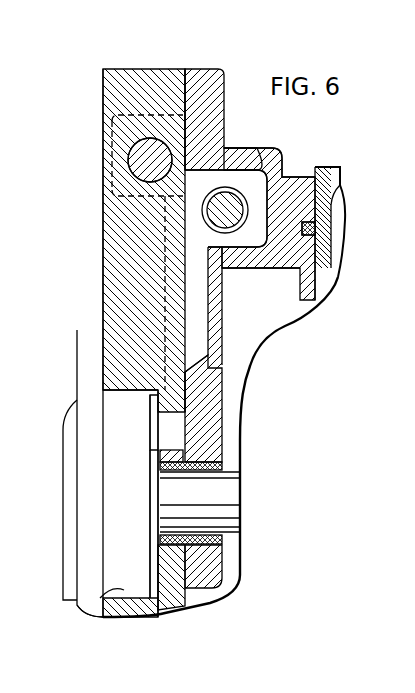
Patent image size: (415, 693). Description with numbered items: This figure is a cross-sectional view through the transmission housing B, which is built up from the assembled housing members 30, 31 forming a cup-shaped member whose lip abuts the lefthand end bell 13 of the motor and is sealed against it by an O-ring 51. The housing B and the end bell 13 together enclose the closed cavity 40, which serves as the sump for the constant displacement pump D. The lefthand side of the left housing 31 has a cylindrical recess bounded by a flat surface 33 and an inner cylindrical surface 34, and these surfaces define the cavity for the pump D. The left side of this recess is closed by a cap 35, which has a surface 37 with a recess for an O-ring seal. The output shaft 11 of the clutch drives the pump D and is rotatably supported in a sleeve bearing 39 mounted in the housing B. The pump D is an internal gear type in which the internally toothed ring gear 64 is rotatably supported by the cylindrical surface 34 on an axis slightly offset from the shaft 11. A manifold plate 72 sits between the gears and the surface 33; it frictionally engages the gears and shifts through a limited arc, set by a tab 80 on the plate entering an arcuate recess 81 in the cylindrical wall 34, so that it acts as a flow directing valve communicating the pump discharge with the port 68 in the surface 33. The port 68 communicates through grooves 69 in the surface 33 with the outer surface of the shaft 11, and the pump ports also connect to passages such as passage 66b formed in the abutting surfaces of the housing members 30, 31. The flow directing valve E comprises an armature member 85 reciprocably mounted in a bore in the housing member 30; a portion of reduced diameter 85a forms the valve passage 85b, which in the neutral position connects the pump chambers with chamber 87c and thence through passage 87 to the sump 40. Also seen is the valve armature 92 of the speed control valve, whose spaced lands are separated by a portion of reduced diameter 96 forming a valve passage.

The output shaft 11 is at (232, 519).
The lefthand end bell 13 is at (327, 172).
The housing member 30 is at (200, 72).
The left housing 31 is at (141, 69).
The flat surface 33 is at (157, 557).
The inner cylindrical surface 34 is at (122, 586).
The cap 35 is at (80, 377).
The surface 37 is at (105, 451).
The sleeve bearing 39 is at (230, 481).
The cavity 40 is at (242, 362).
The O-ring 51 is at (338, 230).
The internally toothed ring gear 64 is at (115, 488).
The passage 66b is at (173, 330).
The port 68 is at (185, 425).
The grooves 69 is at (175, 456).
The manifold plate 72 is at (152, 398).
The tab 80 is at (152, 605).
The arcuate recess 81 is at (92, 608).
The armature member 85 is at (236, 268).
The portion of reduced diameter 85a is at (208, 221).
The valve passage 85b is at (203, 208).
The passage 87 is at (200, 345).
The valve chamber 87c is at (283, 163).
The valve armature 92 is at (140, 162).
The portion of reduced diameter 96 is at (130, 150).
The housing B is at (103, 90).
The constant displacement pump D is at (106, 563).
The flow directing valve E is at (227, 186).